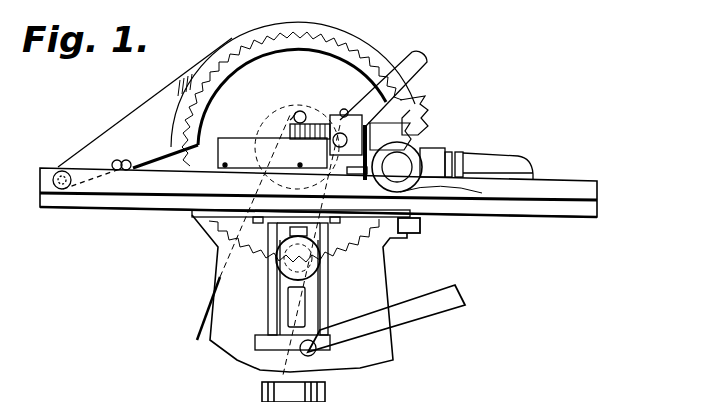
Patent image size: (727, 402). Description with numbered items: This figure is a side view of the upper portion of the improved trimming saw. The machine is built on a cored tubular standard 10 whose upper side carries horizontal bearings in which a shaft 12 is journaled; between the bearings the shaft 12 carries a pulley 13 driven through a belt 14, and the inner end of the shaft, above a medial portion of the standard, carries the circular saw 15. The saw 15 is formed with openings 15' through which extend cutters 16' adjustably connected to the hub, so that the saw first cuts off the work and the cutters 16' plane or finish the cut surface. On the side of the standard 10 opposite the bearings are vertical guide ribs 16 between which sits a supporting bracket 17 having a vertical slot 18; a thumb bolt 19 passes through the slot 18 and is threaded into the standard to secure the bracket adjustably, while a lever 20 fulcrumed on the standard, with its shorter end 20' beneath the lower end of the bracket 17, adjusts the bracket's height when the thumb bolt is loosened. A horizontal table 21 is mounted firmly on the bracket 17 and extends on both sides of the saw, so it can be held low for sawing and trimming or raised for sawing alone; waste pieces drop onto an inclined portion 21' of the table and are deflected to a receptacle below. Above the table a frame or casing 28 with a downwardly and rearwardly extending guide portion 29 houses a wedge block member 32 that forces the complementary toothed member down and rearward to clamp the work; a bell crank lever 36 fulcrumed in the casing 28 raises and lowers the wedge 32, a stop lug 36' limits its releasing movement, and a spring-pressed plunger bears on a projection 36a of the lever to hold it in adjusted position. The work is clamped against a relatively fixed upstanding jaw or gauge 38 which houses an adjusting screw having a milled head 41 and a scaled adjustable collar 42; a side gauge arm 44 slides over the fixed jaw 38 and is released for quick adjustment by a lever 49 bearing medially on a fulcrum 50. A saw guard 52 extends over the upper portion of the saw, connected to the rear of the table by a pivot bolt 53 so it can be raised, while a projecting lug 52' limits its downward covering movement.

The cored tubular standard 10 is at (375, 284).
The shaft 12 is at (295, 385).
The pulley 13 is at (304, 111).
The belt 14 is at (198, 332).
The circular saw 15 is at (165, 157).
The openings 15' is at (326, 89).
The guide ribs 16 is at (295, 279).
The cutters 16' is at (280, 98).
The supporting bracket 17 is at (316, 290).
The vertically extending slot 18 is at (306, 312).
The thumb bolt 19 is at (290, 268).
The lever 20 is at (386, 318).
The shorter end of lever 20' is at (323, 352).
The table 21 is at (334, 192).
The inclined portion of table 21' is at (437, 249).
The frame or casing 28 is at (268, 132).
The guide portion 29 is at (346, 98).
The wedge block member 32 is at (357, 181).
The bell crank lever 36 is at (400, 89).
The stop lug 36' is at (322, 230).
The projection 36a is at (396, 115).
The fixed jaw or gauge 38 is at (388, 151).
The milled head 41 is at (420, 225).
The adjustable collar 42 is at (405, 186).
The side gauge arm 44 is at (487, 163).
The lever 49 is at (463, 157).
The fulcrum 50 is at (451, 192).
The saw guard 52 is at (293, 79).
The projecting lug 52' is at (129, 155).
The pivot bolt 53 is at (58, 168).